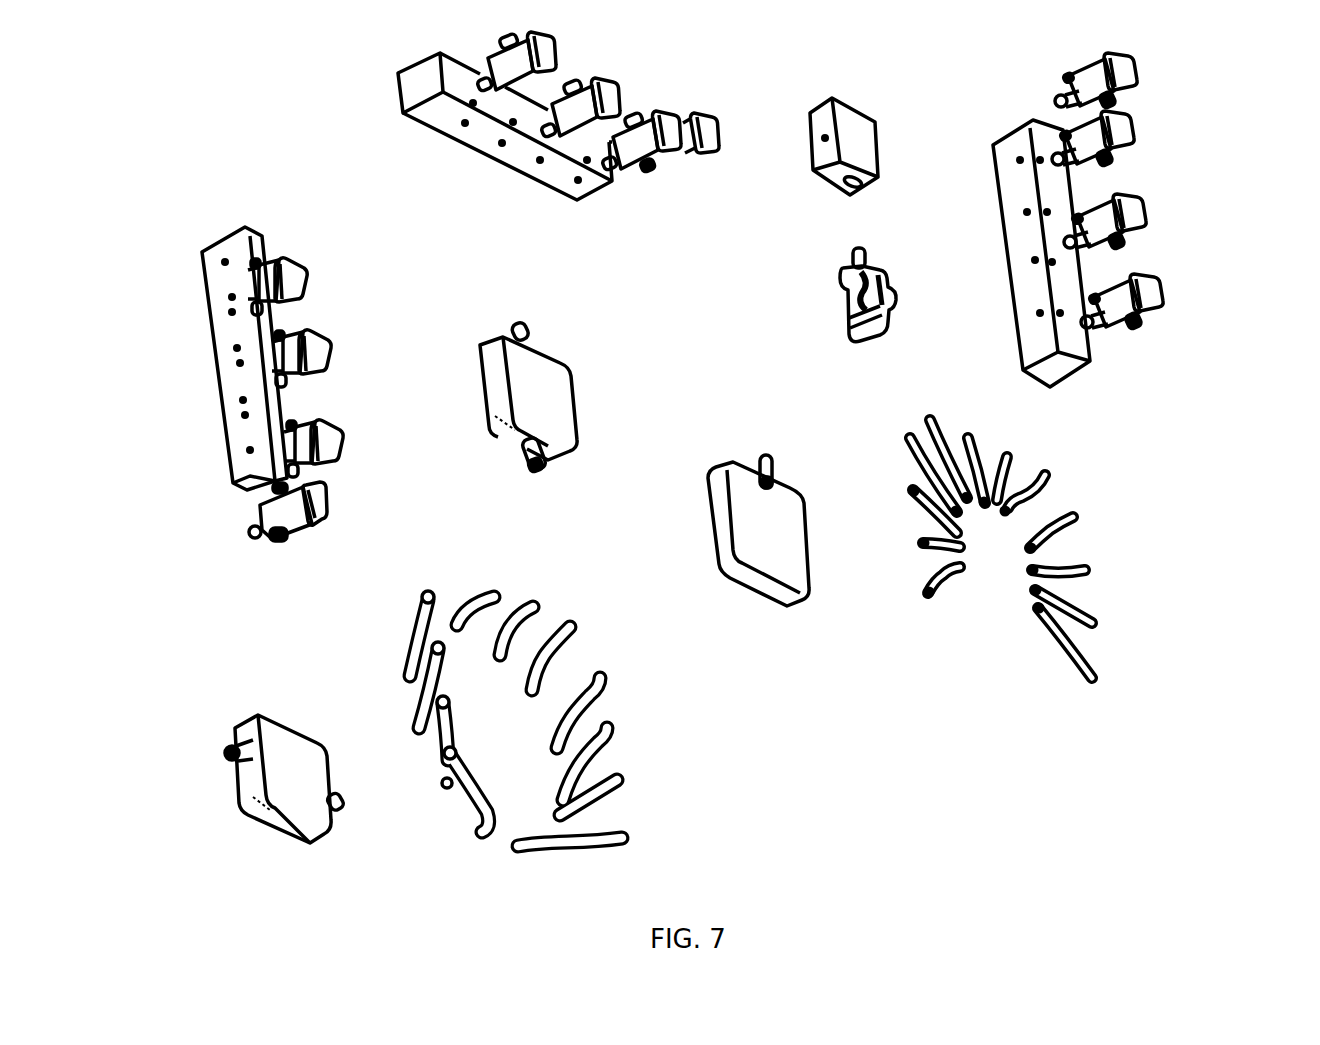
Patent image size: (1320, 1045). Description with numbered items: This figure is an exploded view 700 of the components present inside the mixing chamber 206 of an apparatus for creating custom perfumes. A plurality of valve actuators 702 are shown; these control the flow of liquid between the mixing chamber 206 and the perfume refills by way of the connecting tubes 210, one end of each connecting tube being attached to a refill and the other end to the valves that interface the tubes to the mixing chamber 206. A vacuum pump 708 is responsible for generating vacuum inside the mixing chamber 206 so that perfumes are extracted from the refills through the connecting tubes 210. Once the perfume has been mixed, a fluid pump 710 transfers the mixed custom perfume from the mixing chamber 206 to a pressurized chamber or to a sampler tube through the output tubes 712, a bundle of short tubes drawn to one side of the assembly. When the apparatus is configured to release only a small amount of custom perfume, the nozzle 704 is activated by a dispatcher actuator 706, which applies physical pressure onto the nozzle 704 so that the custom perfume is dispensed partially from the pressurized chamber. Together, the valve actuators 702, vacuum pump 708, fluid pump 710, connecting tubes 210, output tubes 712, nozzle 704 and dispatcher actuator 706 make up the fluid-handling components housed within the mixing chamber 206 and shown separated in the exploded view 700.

The valve actuators 702 is at (692, 160).
The nozzle 704 is at (878, 132).
The dispatcher actuator 706 is at (838, 293).
The vacuum pump 708 is at (550, 373).
The mixing chamber 206 is at (787, 555).
The output tubes 712 is at (1100, 610).
The connecting tubes 210 is at (625, 777).
The fluid pump 710 is at (243, 792).
The exploded view 700 is at (1000, 910).